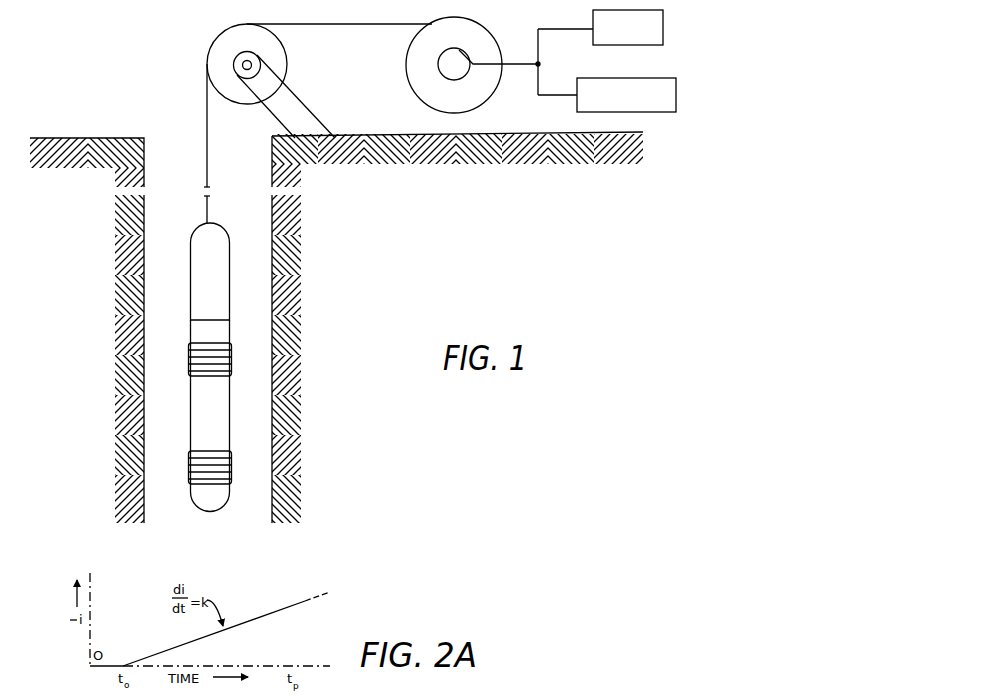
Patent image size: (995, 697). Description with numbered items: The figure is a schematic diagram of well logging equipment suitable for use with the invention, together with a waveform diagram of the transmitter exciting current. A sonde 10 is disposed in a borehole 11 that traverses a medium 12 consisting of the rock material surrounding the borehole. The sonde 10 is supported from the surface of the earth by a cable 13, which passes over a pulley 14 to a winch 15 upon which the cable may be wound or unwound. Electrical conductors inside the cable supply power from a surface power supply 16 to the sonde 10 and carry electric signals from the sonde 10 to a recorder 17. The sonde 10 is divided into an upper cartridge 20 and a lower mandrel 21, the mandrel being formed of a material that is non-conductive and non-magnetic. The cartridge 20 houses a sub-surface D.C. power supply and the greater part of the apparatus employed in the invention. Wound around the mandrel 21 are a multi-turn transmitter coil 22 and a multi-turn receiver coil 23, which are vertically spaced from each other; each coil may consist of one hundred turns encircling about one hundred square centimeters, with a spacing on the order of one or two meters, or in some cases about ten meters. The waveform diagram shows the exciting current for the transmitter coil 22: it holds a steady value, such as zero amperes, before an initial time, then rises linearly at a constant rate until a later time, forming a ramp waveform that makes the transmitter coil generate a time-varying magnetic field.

The sonde 10 is at (212, 367).
The borehole 11 is at (211, 367).
The medium 12 is at (300, 302).
The cable 13 is at (207, 165).
The pulley 14 is at (288, 66).
The winch 15 is at (407, 70).
The surface power supply 16 is at (665, 23).
The recorder 17 is at (659, 72).
The upper cartridge 20 is at (191, 286).
The lower mandrel 21 is at (190, 416).
The multi-turn transmitter coil 22 is at (231, 348).
The multi-turn receiver coil 23 is at (231, 466).